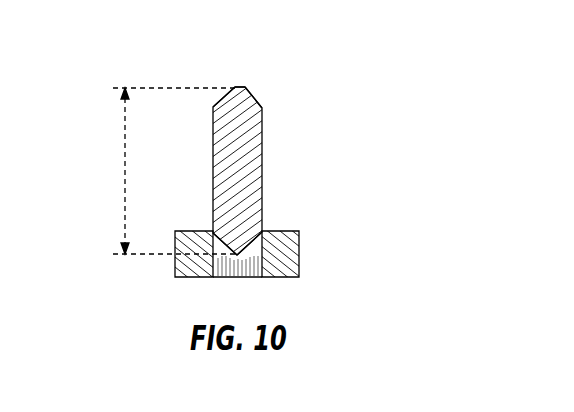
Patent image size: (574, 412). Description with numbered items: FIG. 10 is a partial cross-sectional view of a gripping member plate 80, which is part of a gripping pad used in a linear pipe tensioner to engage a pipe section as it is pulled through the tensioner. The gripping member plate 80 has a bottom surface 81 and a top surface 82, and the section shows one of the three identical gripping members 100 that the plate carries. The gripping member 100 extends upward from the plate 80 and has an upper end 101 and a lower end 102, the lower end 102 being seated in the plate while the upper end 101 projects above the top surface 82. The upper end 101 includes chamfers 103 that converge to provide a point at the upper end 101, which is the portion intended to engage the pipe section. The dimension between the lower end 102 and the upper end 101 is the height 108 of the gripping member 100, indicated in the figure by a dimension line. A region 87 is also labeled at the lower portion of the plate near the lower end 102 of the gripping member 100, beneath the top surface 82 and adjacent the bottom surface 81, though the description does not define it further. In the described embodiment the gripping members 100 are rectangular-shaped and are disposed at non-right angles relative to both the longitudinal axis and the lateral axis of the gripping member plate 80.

The gripping member plate 80 is at (348, 62).
The gripping member 100 is at (248, 150).
The upper end 101 is at (238, 87).
The chamfer 103 is at (225, 97).
The top surface 82 is at (280, 230).
The bottom surface 81 is at (278, 278).
The aperture 87 is at (232, 270).
The lower end 102 is at (238, 254).
The height 108 is at (125, 165).